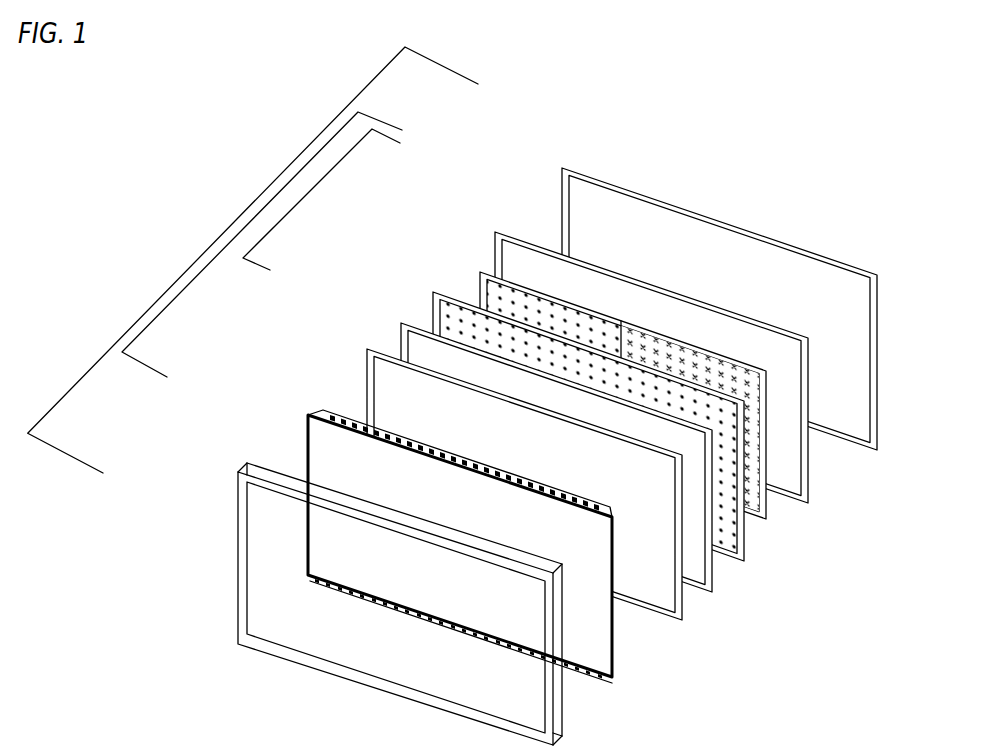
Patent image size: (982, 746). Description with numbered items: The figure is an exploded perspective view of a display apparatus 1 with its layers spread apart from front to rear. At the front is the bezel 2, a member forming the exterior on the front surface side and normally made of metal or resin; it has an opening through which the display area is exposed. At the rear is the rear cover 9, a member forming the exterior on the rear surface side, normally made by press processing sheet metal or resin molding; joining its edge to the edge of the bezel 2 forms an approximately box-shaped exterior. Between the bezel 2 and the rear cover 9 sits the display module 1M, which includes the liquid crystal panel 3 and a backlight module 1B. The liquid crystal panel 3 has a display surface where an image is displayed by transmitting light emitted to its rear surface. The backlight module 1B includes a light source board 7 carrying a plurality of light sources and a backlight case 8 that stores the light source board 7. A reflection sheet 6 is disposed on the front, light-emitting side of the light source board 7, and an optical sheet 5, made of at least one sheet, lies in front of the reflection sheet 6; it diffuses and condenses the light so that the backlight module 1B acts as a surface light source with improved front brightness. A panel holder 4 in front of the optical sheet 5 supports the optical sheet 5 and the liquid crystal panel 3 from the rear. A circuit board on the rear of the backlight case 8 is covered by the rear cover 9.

The display apparatus 1 is at (222, 220).
The display module 1M is at (200, 270).
The backlight module 1B is at (313, 183).
The bezel 2 is at (242, 528).
The liquid crystal panel 3 is at (320, 445).
The panel holder 4 is at (367, 378).
The optical sheet 5 is at (413, 345).
The reflection sheet 6 is at (425, 297).
The light source board 7 is at (470, 266).
The backlight case 8 is at (512, 255).
The rear cover 9 is at (590, 198).